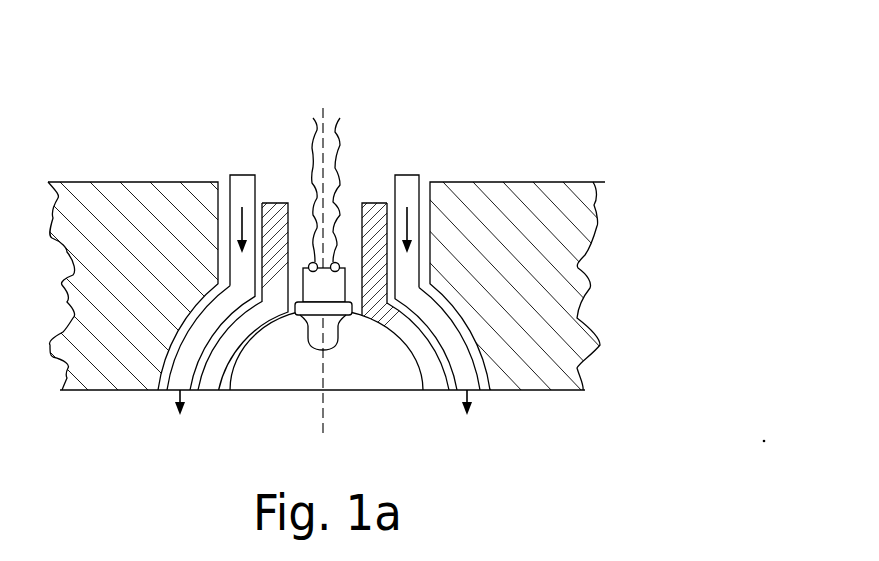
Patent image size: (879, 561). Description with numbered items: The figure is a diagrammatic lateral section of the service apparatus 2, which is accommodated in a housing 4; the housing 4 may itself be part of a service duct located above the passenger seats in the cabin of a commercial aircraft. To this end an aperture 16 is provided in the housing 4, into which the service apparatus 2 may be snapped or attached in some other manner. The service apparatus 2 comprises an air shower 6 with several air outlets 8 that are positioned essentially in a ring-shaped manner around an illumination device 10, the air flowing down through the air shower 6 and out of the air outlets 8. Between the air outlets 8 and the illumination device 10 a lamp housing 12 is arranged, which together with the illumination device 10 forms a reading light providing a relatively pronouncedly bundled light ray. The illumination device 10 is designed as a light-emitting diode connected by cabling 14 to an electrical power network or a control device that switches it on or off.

The service apparatus 2 is at (470, 67).
The housing 4 is at (547, 187).
The air shower 6 is at (263, 172).
The air outlets 8 is at (168, 375).
The illumination device 10 is at (311, 356).
The lamp housing 12 is at (204, 393).
The cabling 14 is at (333, 108).
The aperture 16 is at (192, 290).